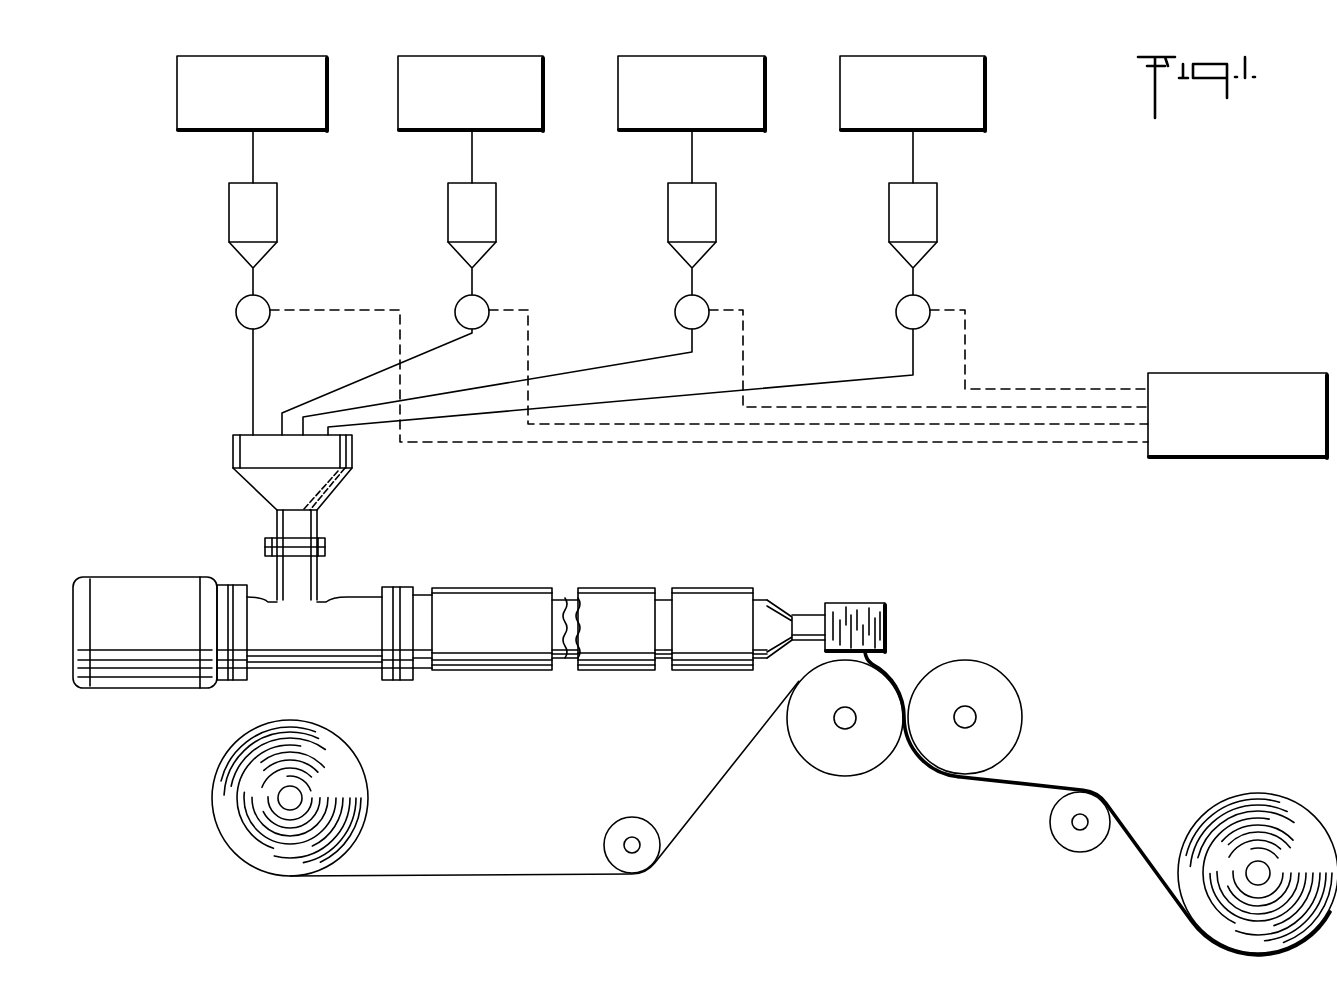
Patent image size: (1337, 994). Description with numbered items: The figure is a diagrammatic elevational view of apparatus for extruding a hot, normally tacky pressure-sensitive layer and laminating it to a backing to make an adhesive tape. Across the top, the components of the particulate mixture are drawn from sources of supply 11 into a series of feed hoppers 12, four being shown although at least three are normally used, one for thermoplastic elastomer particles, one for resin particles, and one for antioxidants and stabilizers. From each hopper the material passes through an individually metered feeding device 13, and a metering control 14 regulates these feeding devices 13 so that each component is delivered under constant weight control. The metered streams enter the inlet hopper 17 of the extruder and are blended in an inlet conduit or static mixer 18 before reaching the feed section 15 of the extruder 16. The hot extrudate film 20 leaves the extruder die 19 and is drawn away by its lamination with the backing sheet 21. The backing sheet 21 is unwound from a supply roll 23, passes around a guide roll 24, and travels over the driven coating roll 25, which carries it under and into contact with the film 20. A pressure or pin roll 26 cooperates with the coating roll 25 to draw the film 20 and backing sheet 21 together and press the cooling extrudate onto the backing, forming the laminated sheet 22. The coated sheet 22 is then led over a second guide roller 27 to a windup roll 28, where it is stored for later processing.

The sources of supply 11 is at (327, 96).
The feed hoppers 12 is at (266, 215).
The feeding devices 13 is at (267, 303).
The metering control 14 is at (1236, 373).
The feed section 15 is at (346, 605).
The extruder 16 is at (505, 588).
The inlet hopper 17 is at (235, 447).
The static mixer 18 is at (318, 523).
The extruder die 19 is at (851, 603).
The extrudate film 20 is at (878, 660).
The backing sheet 21 is at (724, 788).
The laminated sheet 22 is at (1011, 788).
The supply roll 23 is at (344, 772).
The guide roll 24 is at (629, 826).
The coating roll 25 is at (844, 764).
The pin roll 26 is at (974, 672).
The second guide roller 27 is at (1077, 839).
The windup roll 28 is at (1249, 808).